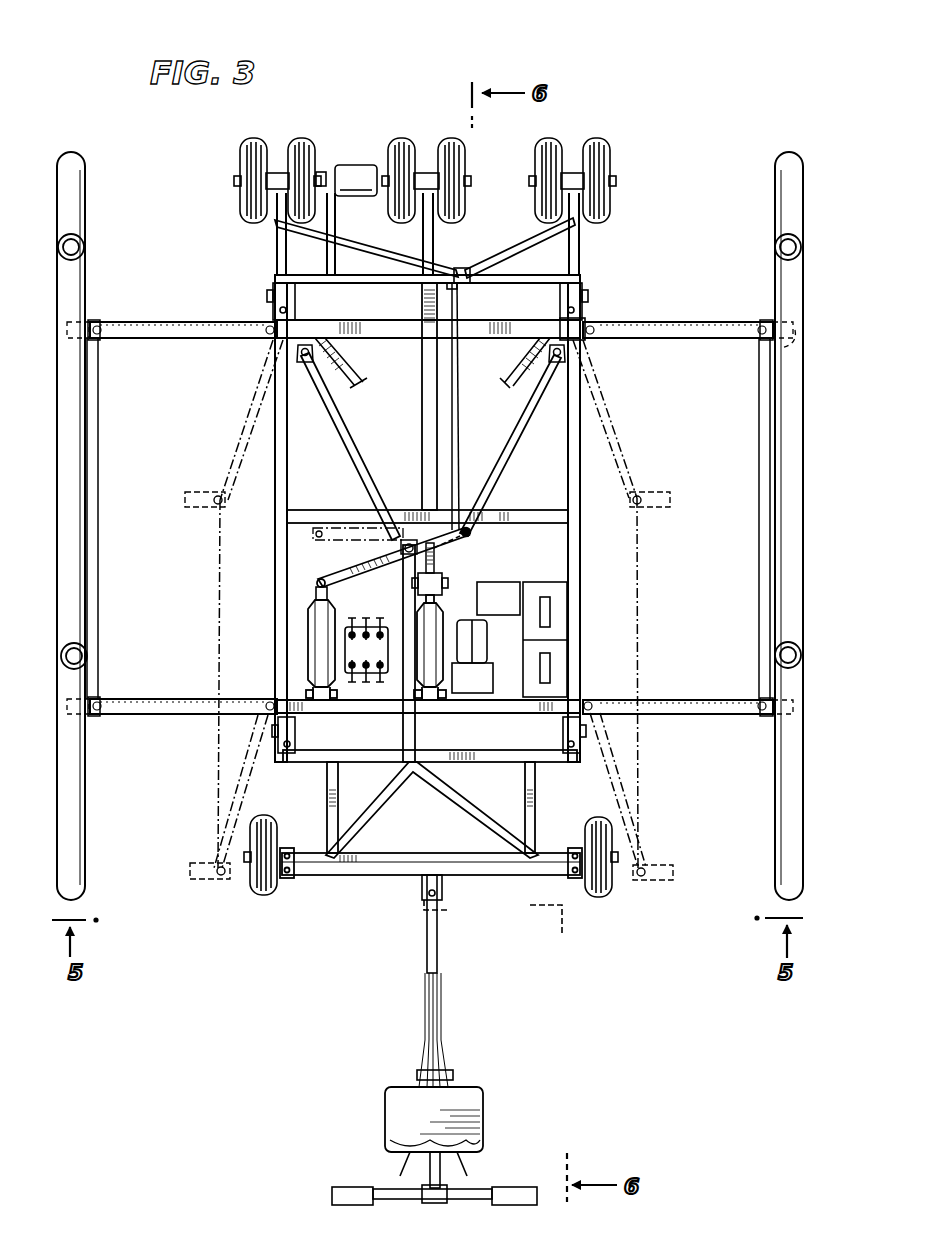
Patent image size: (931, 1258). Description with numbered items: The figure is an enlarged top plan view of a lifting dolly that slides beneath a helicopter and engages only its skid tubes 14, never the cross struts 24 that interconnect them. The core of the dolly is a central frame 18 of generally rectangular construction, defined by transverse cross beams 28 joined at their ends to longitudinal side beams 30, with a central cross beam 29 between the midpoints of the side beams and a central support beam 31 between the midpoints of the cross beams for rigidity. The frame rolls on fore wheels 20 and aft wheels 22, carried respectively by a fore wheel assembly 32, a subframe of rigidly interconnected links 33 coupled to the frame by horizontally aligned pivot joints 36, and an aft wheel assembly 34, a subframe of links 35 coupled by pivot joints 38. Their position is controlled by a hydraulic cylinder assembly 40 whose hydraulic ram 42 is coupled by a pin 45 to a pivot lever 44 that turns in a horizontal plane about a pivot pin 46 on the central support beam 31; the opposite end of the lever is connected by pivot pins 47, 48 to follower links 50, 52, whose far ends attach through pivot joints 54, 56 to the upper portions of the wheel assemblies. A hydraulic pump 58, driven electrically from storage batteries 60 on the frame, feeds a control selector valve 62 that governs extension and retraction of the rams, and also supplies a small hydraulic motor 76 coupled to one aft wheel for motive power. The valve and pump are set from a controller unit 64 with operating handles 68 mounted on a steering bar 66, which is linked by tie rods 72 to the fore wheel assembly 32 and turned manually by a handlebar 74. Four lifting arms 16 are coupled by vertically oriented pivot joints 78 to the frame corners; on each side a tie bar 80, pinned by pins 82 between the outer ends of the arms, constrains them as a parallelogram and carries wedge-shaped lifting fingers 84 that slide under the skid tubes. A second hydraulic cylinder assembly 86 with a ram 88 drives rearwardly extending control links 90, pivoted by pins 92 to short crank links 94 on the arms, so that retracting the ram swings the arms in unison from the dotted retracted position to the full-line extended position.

The skid tubes 14 is at (82, 458).
The lifting arms 16 is at (178, 322).
The central frame 18 is at (545, 432).
The fore wheels 20 is at (262, 897).
The aft wheels 22 is at (298, 140).
The cross struts 24 is at (778, 240).
The cross beams 28 is at (390, 330).
The central cross beam 29 is at (308, 510).
The side beams 30 is at (280, 492).
The central support beam 31 is at (423, 376).
The fore wheel assembly 32 is at (383, 826).
The links 33 is at (483, 816).
The aft wheel assembly 34 is at (466, 240).
The links 35 is at (388, 250).
The pivot joints 36 is at (290, 756).
The pivot joints 38 is at (270, 292).
The hydraulic cylinder assembly 40 is at (308, 632).
The hydraulic ram 42 is at (316, 596).
The pivot lever 44 is at (372, 560).
The pin 45 is at (312, 534).
The pivot pin 46 is at (409, 540).
The pivot pin 47 is at (408, 568).
The pivot pin 48 is at (472, 534).
The follower link 50 is at (414, 735).
The follower link 52 is at (459, 420).
The pivot joint 54 is at (430, 752).
The pivot joint 56 is at (470, 277).
The hydraulic pump 58 is at (476, 645).
The storage batteries 60 is at (568, 622).
The control selector valve 62 is at (372, 690).
The controller unit 64 is at (486, 1100).
The steering bar 66 is at (440, 950).
The operating handles 68 is at (403, 1165).
The tie rods 72 is at (387, 877).
The handlebar 74 is at (385, 1190).
The hydraulic motor 76 is at (366, 166).
The pivot joints 78 is at (586, 330).
The tie bar 80 is at (100, 560).
The pins 82 is at (763, 322).
The lifting fingers 84 is at (780, 350).
The second hydraulic cylinder assembly 86 is at (414, 613).
The ram 88 is at (452, 583).
The control links 90 is at (350, 440).
The pins 92 is at (300, 358).
The crank links 94 is at (322, 340).